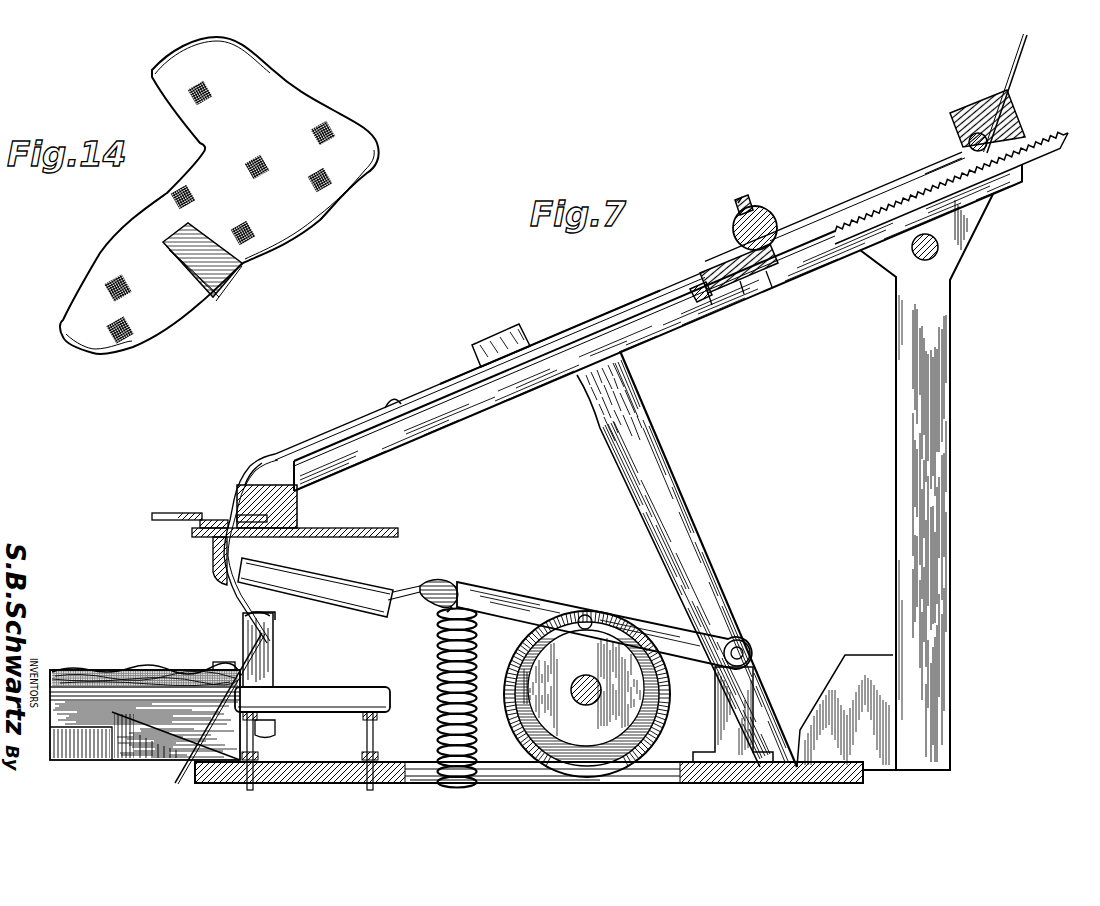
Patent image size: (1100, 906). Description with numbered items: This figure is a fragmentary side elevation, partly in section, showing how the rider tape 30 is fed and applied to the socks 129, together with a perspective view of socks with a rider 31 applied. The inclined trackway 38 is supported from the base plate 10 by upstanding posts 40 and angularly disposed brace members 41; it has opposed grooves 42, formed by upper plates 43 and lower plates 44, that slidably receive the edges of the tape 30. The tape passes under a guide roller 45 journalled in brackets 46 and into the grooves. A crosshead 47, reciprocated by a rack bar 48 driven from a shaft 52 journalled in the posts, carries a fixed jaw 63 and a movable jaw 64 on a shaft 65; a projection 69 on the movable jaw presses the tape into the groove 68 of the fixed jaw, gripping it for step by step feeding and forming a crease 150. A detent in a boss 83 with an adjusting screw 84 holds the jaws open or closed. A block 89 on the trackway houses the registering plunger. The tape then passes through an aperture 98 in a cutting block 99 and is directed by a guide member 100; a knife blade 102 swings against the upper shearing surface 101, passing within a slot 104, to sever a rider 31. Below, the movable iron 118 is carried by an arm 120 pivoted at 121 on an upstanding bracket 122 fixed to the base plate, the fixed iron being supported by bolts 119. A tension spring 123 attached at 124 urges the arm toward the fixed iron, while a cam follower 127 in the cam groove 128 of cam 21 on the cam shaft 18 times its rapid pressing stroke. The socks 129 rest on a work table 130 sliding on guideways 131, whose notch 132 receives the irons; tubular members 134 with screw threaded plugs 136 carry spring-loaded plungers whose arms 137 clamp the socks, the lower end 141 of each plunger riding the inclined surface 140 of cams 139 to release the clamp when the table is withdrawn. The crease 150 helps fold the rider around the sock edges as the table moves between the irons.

In FIG. 7, the base plate 10 is at (350, 762).
In FIG. 7, the cam shaft 18 is at (607, 672).
In FIG. 7, the cam 21 is at (668, 736).
In FIG. 7, the tape 30 is at (1015, 55).
In FIG. 14, the rider 31 is at (243, 265).
In FIG. 7, the rider 31 is at (458, 380).
In FIG. 7, the inclined trackway 38 is at (583, 322).
In FIG. 7, the upstanding posts 40 is at (952, 348).
In FIG. 7, the brace members 41 is at (660, 450).
In FIG. 7, the grooves 42 is at (927, 183).
In FIG. 7, the upper plates 43 is at (892, 200).
In FIG. 7, the lower plates 44 is at (840, 203).
In FIG. 7, the guide roller 45 is at (968, 141).
In FIG. 7, the brackets 46 is at (987, 103).
In FIG. 7, the crosshead 47 is at (768, 275).
In FIG. 7, the rack bar 48 is at (1030, 148).
In FIG. 7, the shaft 52 is at (938, 247).
In FIG. 7, the fixed jaw 63 is at (743, 282).
In FIG. 7, the movable jaw 64 is at (699, 285).
In FIG. 7, the shaft 65 is at (776, 225).
In FIG. 7, the groove 68 is at (707, 285).
In FIG. 7, the projection 69 is at (735, 265).
In FIG. 7, the boss 83 is at (752, 205).
In FIG. 7, the adjusting screw 84 is at (742, 200).
In FIG. 7, the block 89 is at (540, 308).
In FIG. 7, the aperture 98 is at (240, 492).
In FIG. 7, the cutting block 99 is at (300, 500).
In FIG. 7, the guide member 100 is at (213, 552).
In FIG. 7, the upper shearing surface 101 is at (212, 519).
In FIG. 7, the knife blade 102 is at (170, 512).
In FIG. 7, the slot 104 is at (268, 535).
In FIG. 7, the movable iron 118 is at (376, 615).
In FIG. 7, the bolts 119 is at (376, 740).
In FIG. 7, the arm 120 is at (528, 596).
In FIG. 7, the pivot 121 is at (748, 648).
In FIG. 7, the upstanding bracket 122 is at (752, 690).
In FIG. 7, the tension spring 123 is at (437, 672).
In FIG. 7, the spring attachment 124 is at (455, 585).
In FIG. 7, the cam follower 127 is at (590, 616).
In FIG. 7, the cam groove 128 is at (665, 697).
In FIG. 14, the socks 129 is at (152, 213).
In FIG. 7, the socks 129 is at (178, 670).
In FIG. 7, the work table 130 is at (58, 678).
In FIG. 7, the guideways 131 is at (86, 762).
In FIG. 7, the notch 132 is at (93, 683).
In FIG. 7, the tubular members 134 is at (278, 662).
In FIG. 7, the screw threaded plugs 136 is at (270, 614).
In FIG. 7, the arms 137 is at (228, 666).
In FIG. 7, the cams 139 is at (177, 780).
In FIG. 7, the inclined surface 140 is at (118, 760).
In FIG. 7, the lower end 141 is at (276, 730).
In FIG. 7, the crease 150 is at (397, 410).